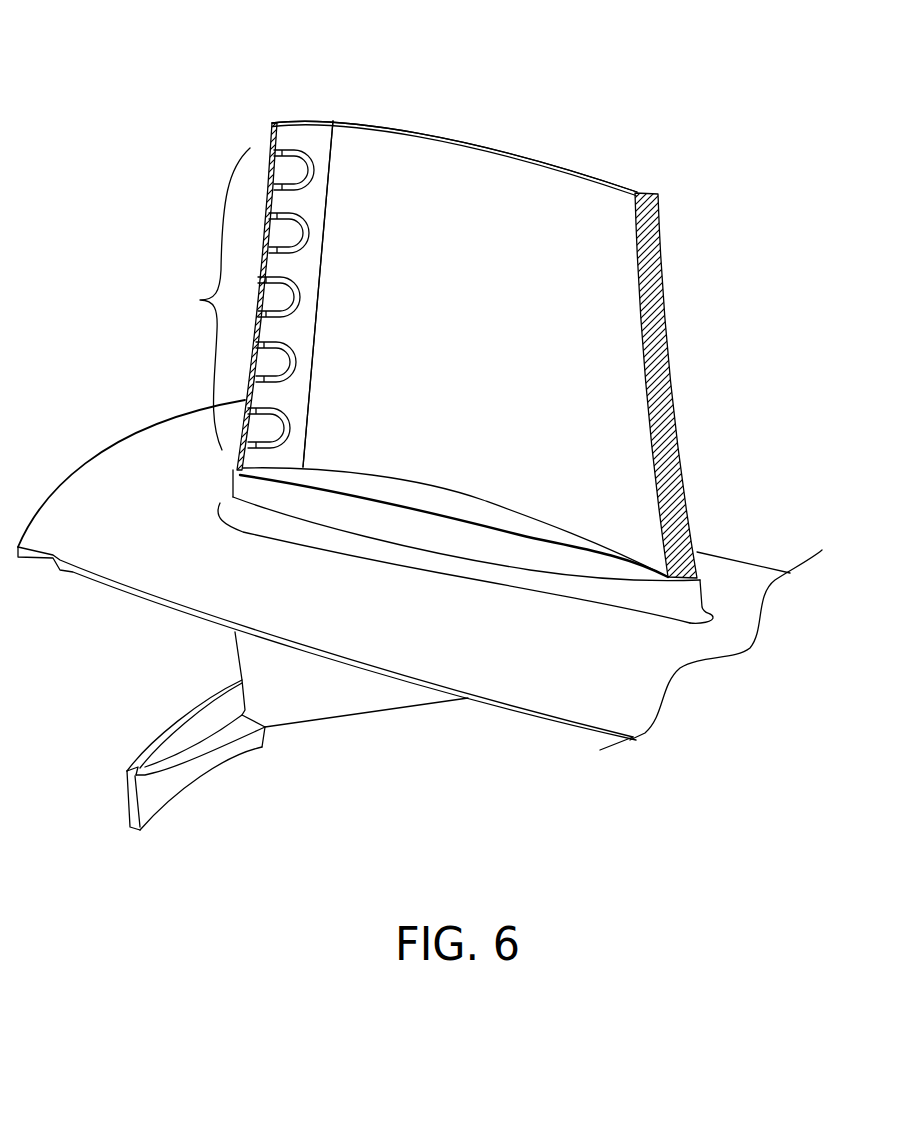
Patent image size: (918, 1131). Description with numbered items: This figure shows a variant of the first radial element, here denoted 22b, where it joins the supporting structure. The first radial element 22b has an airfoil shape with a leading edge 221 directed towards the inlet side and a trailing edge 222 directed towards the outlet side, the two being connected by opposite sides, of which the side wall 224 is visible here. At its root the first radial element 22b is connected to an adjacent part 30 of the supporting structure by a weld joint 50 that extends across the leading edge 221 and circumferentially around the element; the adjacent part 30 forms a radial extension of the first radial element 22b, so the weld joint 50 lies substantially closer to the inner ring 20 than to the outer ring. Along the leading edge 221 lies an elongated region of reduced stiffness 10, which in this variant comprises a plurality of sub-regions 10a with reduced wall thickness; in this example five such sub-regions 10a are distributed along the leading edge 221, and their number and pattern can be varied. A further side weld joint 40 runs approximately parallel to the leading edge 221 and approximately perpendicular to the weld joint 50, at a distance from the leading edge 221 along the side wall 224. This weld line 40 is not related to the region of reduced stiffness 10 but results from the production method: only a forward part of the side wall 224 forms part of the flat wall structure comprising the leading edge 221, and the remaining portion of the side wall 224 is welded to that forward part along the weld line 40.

The region of reduced stiffness 10 is at (200, 300).
The sub-region with reduced wall thickness 10a is at (290, 166).
The inner ring 20 is at (590, 660).
The first radial element 22b is at (639, 122).
The adjacent part of the supporting structure 30 is at (533, 555).
The side weld joint 40 is at (330, 188).
The weld joint 50 is at (487, 493).
The leading edge 221 is at (269, 133).
The trailing edge 222 is at (665, 295).
The side wall 224 is at (507, 204).